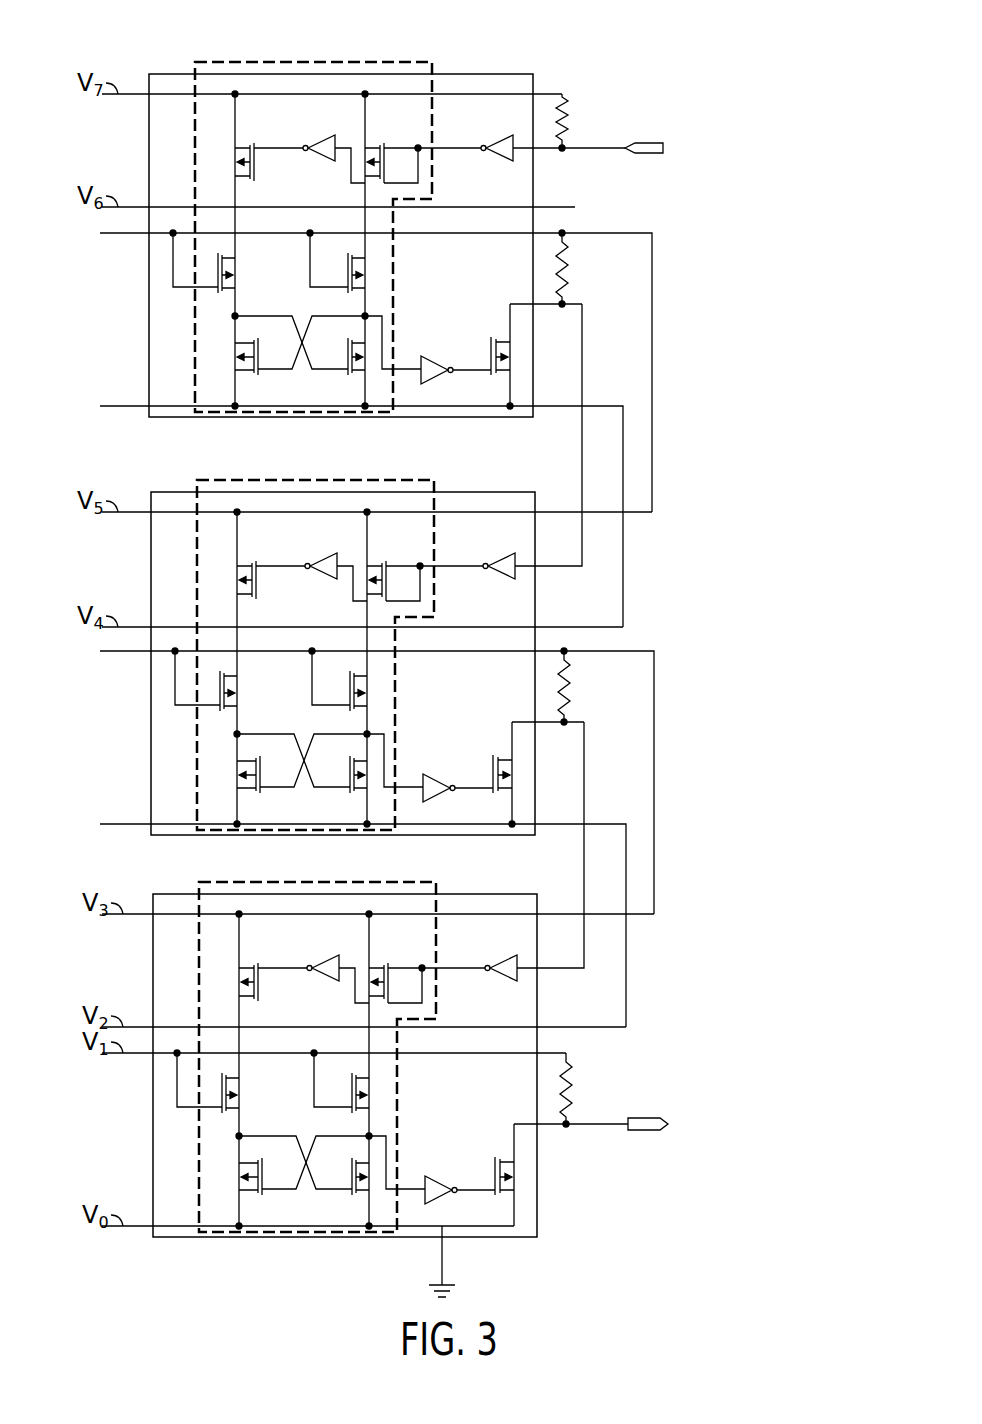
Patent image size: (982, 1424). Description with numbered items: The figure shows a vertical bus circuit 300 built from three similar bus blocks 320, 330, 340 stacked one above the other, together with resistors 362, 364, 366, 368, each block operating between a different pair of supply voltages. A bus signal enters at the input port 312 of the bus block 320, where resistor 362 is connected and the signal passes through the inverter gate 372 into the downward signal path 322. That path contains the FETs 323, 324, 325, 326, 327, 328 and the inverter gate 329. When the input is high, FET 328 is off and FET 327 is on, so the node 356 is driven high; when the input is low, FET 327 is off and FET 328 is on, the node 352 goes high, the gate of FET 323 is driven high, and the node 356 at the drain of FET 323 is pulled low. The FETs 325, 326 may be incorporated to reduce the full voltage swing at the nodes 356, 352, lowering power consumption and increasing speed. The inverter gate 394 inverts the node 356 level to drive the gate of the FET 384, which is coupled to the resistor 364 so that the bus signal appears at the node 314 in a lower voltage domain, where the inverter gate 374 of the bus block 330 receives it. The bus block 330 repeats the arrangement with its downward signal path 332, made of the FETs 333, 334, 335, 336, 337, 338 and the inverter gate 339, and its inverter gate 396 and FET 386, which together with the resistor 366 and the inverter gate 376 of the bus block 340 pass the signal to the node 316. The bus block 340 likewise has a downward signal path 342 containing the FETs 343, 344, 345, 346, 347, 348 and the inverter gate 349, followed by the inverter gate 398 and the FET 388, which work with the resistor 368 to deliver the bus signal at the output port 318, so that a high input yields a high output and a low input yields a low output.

The vertical bus circuit 300 is at (702, 85).
The input port 312 is at (650, 143).
The node 314 is at (566, 301).
The node 316 is at (567, 710).
The output port 318 is at (609, 1111).
The bus block 320 is at (503, 73).
The downward signal path 322 is at (390, 62).
The FET 323 is at (353, 383).
The FET 324 is at (252, 385).
The FET 325 is at (381, 265).
The FET 326 is at (250, 265).
The FET 327 is at (378, 127).
The FET 328 is at (248, 127).
The inverter gate 329 is at (325, 163).
The bus block 330 is at (355, 649).
The downward signal path 332 is at (322, 641).
The FET 333 is at (334, 790).
The FET 334 is at (269, 790).
The FET 335 is at (373, 679).
The FET 336 is at (239, 679).
The FET 337 is at (425, 559).
The FET 338 is at (266, 558).
The inverter gate 339 is at (311, 583).
The bus block 340 is at (357, 1051).
The downward signal path 342 is at (324, 1043).
The FET 343 is at (336, 1192).
The FET 344 is at (271, 1192).
The FET 345 is at (375, 1081).
The FET 346 is at (241, 1081).
The FET 347 is at (427, 961).
The FET 348 is at (268, 960).
The inverter gate 349 is at (313, 985).
The node 352 is at (237, 315).
The node 356 is at (365, 315).
The resistor 362 is at (568, 112).
The resistor 364 is at (570, 262).
The resistor 366 is at (592, 685).
The resistor 368 is at (595, 1088).
The inverter gate 372 is at (503, 137).
The inverter gate 374 is at (481, 557).
The inverter gate 376 is at (483, 959).
The FET 384 is at (501, 322).
The FET 386 is at (486, 765).
The FET 388 is at (487, 1166).
The inverter gate 394 is at (425, 360).
The inverter gate 396 is at (458, 777).
The inverter gate 398 is at (460, 1179).